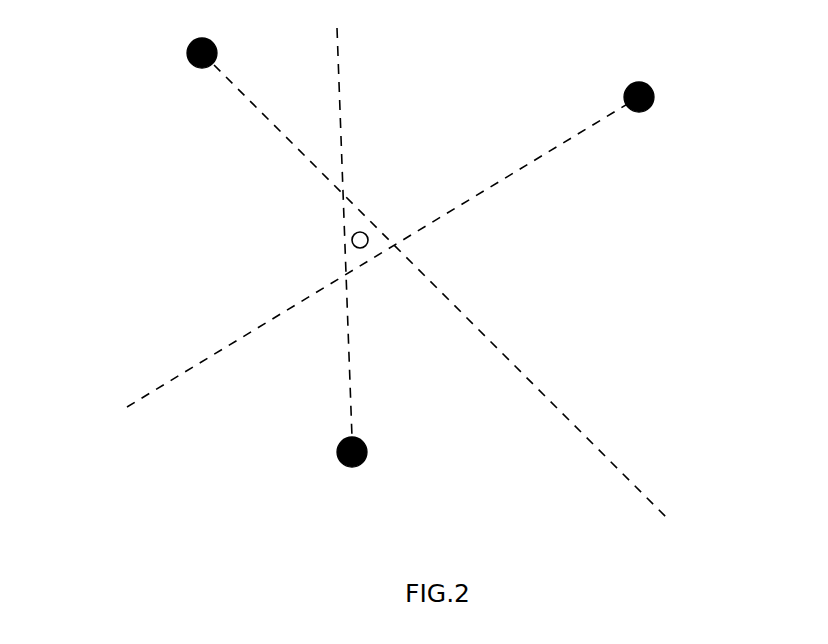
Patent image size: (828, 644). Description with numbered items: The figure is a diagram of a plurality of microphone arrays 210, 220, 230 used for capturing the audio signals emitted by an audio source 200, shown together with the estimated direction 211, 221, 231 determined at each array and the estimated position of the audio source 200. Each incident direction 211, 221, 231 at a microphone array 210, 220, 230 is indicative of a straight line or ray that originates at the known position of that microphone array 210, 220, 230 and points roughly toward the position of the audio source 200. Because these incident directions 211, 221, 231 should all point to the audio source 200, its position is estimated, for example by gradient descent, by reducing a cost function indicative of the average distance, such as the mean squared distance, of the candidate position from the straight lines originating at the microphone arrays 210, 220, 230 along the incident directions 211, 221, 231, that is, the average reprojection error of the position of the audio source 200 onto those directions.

The audio source 200 is at (367, 230).
The microphone array 210 is at (172, 54).
The incident direction 211 is at (280, 138).
The microphone array 220 is at (623, 95).
The incident direction 221 is at (508, 175).
The microphone array 230 is at (335, 455).
The incident direction 231 is at (353, 369).